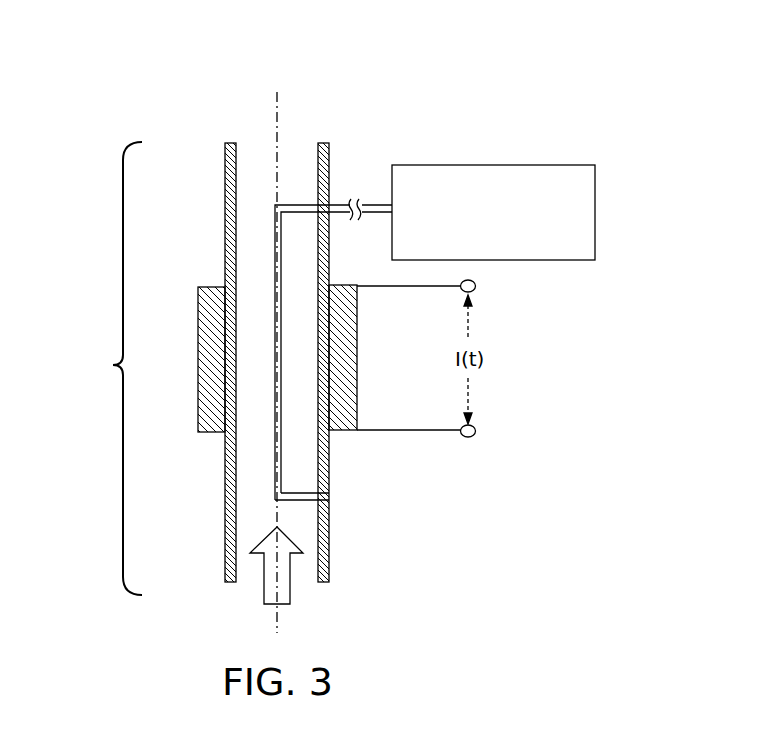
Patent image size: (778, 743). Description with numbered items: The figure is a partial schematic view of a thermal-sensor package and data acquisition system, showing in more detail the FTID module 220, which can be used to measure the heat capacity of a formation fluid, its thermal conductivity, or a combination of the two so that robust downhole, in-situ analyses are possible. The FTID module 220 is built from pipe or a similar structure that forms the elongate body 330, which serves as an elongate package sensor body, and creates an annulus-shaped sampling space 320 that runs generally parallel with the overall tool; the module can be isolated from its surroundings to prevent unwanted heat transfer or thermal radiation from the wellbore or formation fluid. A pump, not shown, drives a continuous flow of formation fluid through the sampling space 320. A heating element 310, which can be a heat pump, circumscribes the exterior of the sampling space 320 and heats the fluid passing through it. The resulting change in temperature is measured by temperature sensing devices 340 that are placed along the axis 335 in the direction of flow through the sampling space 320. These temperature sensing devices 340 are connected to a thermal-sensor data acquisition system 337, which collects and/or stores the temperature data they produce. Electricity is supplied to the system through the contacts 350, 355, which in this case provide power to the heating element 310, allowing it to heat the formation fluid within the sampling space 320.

The FTID module 220 is at (532, 66).
The heating element 310 is at (198, 357).
The sampling space 320 is at (102, 368).
The elongate body 330 is at (225, 236).
The axis 335 is at (276, 113).
The thermal-sensor data acquisition system 337 is at (570, 210).
The temperature sensing devices 340 is at (274, 265).
The contact 350 is at (476, 284).
The contact 355 is at (476, 430).